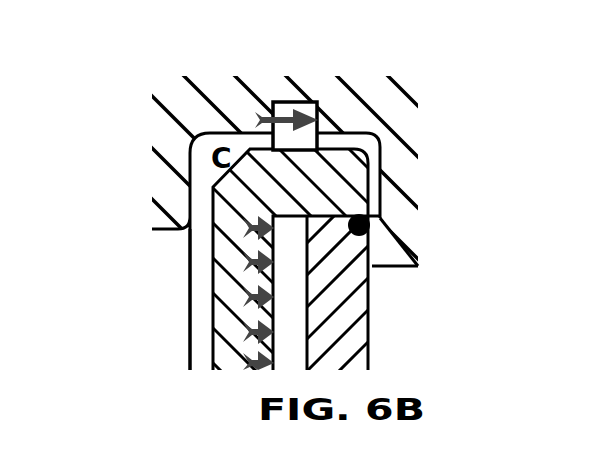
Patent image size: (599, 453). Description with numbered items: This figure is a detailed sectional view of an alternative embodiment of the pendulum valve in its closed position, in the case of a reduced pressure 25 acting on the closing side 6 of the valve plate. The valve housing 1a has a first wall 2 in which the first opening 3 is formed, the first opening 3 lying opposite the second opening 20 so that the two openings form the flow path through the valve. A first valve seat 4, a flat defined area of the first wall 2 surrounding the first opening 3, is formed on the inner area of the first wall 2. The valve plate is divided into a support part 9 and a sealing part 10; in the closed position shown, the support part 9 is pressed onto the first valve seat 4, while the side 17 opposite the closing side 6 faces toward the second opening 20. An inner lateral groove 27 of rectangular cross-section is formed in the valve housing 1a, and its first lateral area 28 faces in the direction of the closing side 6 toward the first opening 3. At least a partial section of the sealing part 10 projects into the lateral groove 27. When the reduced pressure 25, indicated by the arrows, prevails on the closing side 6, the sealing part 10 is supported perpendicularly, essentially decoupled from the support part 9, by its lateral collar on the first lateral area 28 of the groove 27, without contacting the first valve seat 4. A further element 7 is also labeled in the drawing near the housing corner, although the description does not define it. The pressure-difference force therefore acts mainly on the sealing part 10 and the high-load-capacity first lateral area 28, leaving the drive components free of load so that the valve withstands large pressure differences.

The valve housing 1a is at (453, 118).
The first wall 2 is at (403, 165).
The first opening 3 is at (410, 342).
The first valve seat 4 is at (370, 238).
The closing side 6 is at (470, 375).
The chamfer 7 is at (380, 219).
The support part 9 is at (330, 295).
The sealing part 10 is at (232, 300).
The side opposite the closing side 17 is at (112, 374).
The second opening 20 is at (176, 339).
The reduced pressure 25 is at (250, 258).
The inner lateral groove 27 is at (292, 103).
The first lateral area 28 is at (319, 112).